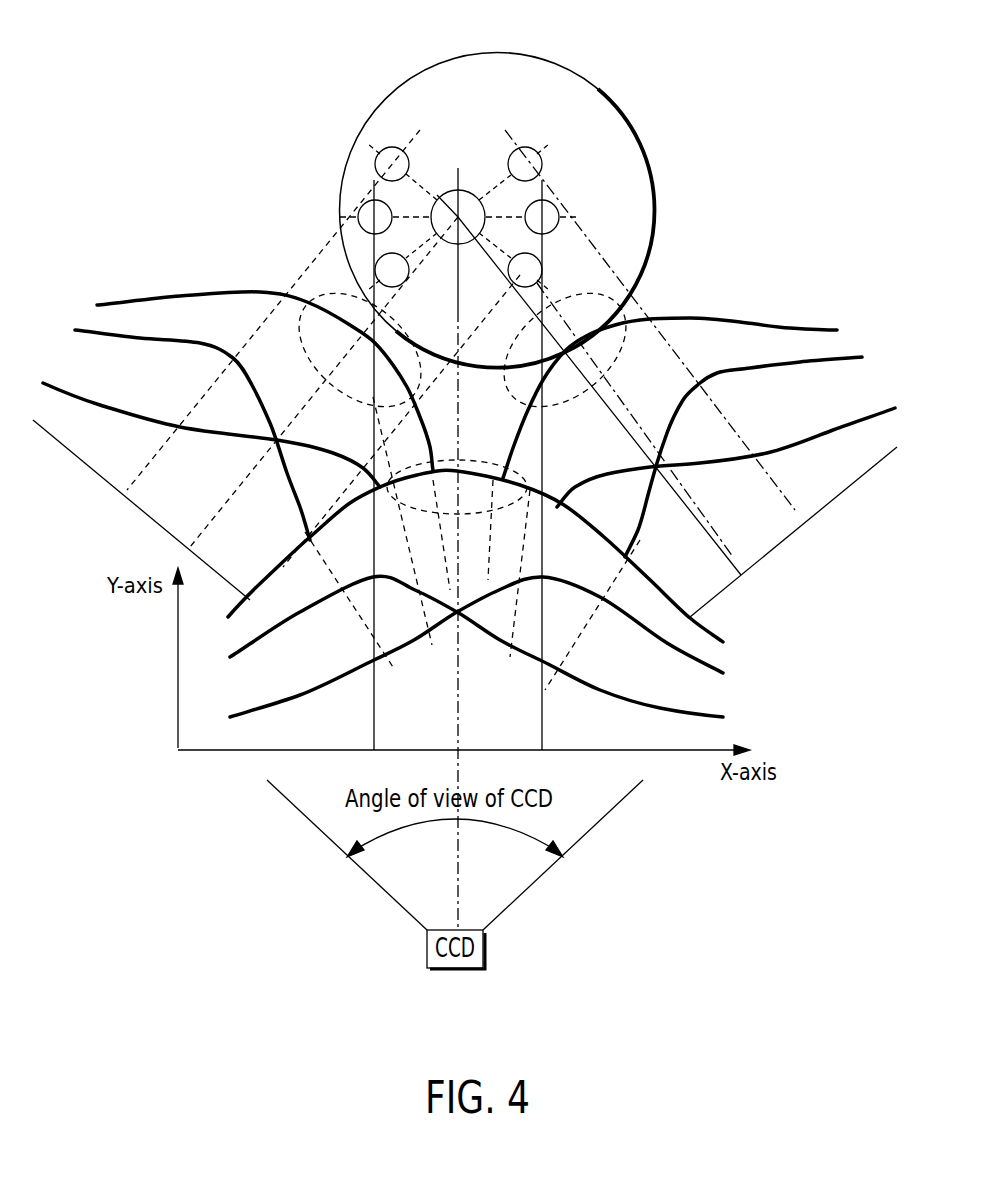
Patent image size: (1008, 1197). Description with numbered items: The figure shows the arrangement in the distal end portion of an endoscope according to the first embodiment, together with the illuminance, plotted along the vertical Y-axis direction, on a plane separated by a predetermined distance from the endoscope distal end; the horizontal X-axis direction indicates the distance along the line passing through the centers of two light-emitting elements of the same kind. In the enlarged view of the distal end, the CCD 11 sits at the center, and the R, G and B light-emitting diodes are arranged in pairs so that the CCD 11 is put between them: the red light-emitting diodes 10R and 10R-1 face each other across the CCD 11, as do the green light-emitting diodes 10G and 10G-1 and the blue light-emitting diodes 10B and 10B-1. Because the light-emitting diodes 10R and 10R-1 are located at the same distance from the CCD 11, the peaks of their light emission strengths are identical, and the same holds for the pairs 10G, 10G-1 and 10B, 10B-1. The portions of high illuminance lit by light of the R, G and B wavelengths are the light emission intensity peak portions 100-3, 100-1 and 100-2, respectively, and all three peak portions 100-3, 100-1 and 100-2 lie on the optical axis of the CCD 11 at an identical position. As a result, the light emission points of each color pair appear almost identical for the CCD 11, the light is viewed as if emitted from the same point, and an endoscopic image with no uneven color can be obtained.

The CCD 11 is at (450, 193).
The G light-emitting diode 10G is at (530, 146).
The R light-emitting diode 10R is at (543, 198).
The B light-emitting diode 10B is at (540, 256).
The B light-emitting diode 10B-1 is at (385, 150).
The R light-emitting diode 10R-1 is at (368, 200).
The G light-emitting diode 10G-1 is at (380, 255).
The light emission intensity peak portion 100-1 is at (540, 320).
The light emission intensity peak portion 100-2 is at (300, 263).
The light emission intensity peak portion 100-3 is at (527, 472).